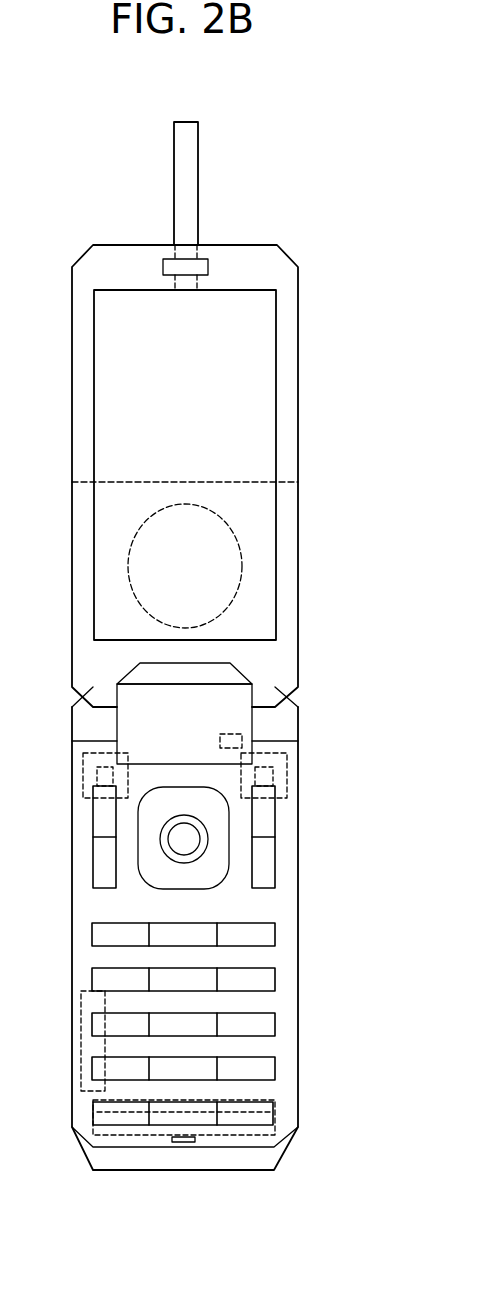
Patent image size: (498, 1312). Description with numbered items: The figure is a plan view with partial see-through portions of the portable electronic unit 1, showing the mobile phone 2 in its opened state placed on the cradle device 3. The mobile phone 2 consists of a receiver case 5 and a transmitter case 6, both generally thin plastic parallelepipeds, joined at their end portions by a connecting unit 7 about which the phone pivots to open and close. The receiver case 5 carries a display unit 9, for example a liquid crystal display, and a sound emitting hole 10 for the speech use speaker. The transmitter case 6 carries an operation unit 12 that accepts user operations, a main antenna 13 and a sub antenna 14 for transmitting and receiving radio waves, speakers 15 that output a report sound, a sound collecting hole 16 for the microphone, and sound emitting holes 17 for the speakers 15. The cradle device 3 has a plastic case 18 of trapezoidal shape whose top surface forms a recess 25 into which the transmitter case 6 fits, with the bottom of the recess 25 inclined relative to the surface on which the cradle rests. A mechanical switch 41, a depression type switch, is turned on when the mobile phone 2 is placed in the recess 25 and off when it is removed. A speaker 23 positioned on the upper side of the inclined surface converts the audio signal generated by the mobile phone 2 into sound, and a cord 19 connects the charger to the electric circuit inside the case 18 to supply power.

The portable electronic unit 1 is at (210, 649).
The mobile phone 2 is at (291, 826).
The cradle device 3 is at (285, 1143).
The receiver case 5 is at (290, 442).
The transmitter case 6 is at (291, 870).
The connecting unit 7 is at (238, 722).
The display unit 9 is at (276, 362).
The sound emitting hole 10 is at (205, 260).
The operation unit 12 is at (290, 997).
The main antenna 13 is at (243, 1135).
The sub antenna 14 is at (80, 1043).
The speakers 15 is at (287, 768).
The sound collecting hole 16 is at (185, 1142).
The sound emitting holes 17 is at (273, 778).
The case 18 is at (274, 1158).
The cord 19 is at (198, 170).
The speaker 23 is at (130, 568).
The recess 25 is at (280, 1117).
The mechanical switch 41 is at (242, 748).